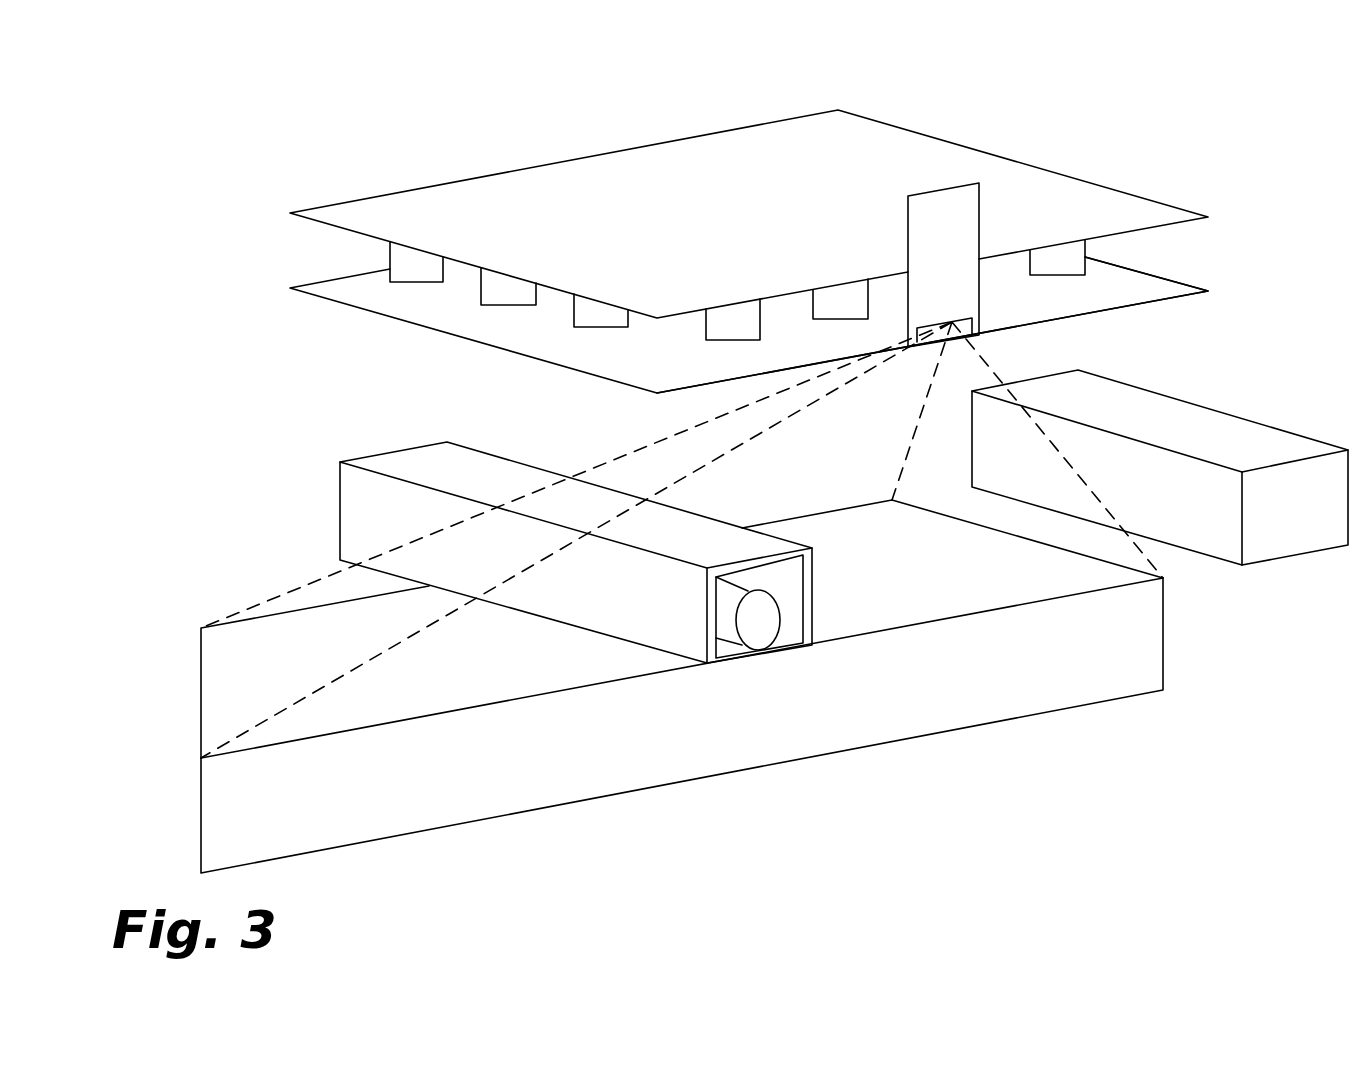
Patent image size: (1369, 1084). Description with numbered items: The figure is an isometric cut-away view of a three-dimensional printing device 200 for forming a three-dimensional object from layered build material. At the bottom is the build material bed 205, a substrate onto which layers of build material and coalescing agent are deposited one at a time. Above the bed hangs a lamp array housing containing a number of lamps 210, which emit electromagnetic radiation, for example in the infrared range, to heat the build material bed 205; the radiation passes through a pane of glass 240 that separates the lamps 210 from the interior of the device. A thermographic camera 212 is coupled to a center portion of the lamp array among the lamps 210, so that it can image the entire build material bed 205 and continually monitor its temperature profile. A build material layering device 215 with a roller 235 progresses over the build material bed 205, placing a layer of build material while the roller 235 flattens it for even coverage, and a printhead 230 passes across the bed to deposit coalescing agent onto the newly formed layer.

The 3D printing device 200 is at (260, 99).
The build material bed 205 is at (332, 640).
The lamps 210 is at (368, 256).
The thermographic camera 212 is at (932, 210).
The build material layering device 215 is at (378, 492).
The printhead 230 is at (1196, 573).
The roller 235 is at (765, 665).
The pane of glass 240 is at (1153, 316).